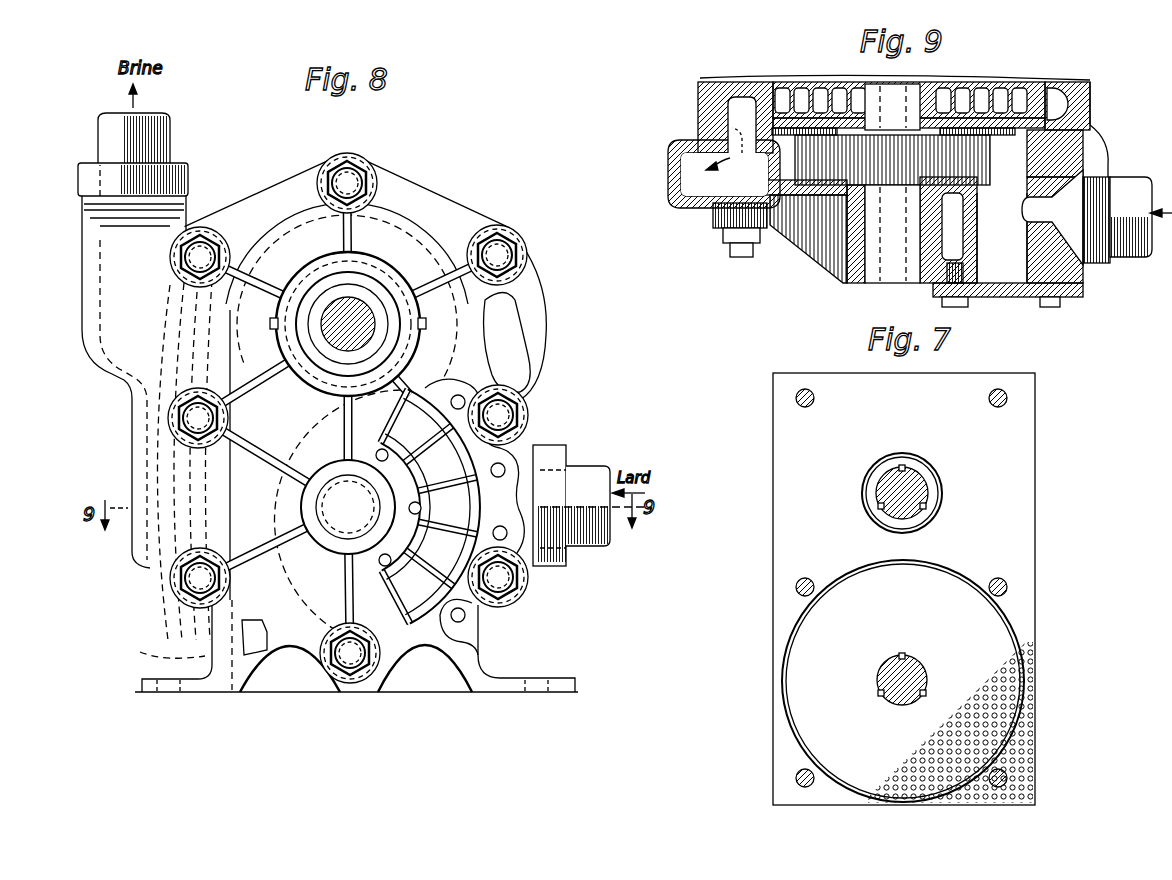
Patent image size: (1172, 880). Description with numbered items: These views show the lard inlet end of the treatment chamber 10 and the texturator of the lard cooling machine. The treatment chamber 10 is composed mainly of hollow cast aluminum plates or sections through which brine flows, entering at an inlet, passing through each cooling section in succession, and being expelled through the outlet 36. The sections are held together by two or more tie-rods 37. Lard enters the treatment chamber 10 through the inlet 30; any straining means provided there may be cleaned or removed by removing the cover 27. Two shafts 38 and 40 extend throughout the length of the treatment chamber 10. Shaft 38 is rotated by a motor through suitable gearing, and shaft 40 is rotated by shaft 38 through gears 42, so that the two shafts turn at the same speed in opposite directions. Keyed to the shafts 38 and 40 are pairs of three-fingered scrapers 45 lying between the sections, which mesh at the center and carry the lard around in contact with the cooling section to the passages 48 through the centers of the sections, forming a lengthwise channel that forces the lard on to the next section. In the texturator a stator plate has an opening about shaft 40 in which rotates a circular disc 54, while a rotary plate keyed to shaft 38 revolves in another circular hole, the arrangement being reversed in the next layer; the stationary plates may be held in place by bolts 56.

In FIG. 8, the treatment chamber 10 is at (413, 212).
In FIG. 9, the treatment chamber 10 is at (687, 207).
In FIG. 9, the cover 27 is at (1010, 293).
In FIG. 8, the inlet 30 is at (590, 476).
In FIG. 9, the inlet 30 is at (1133, 190).
In FIG. 8, the outlet 36 is at (187, 176).
In FIG. 9, the outlet 36 is at (670, 158).
In FIG. 8, the tie-rods 37 is at (199, 256).
In FIG. 9, the tie-rods 37 is at (742, 258).
In FIG. 8, the shaft 38 is at (380, 323).
In FIG. 7, the shaft 38 is at (895, 488).
In FIG. 8, the shaft 40 is at (340, 488).
In FIG. 9, the shaft 40 is at (870, 258).
In FIG. 7, the shaft 40 is at (895, 672).
In FIG. 9, the gears 42 is at (828, 140).
In FIG. 9, the scrapers 45 is at (975, 125).
In FIG. 9, the passages 48 is at (958, 88).
In FIG. 7, the circular disc 54 is at (932, 483).
In FIG. 7, the bolts 56 is at (989, 400).